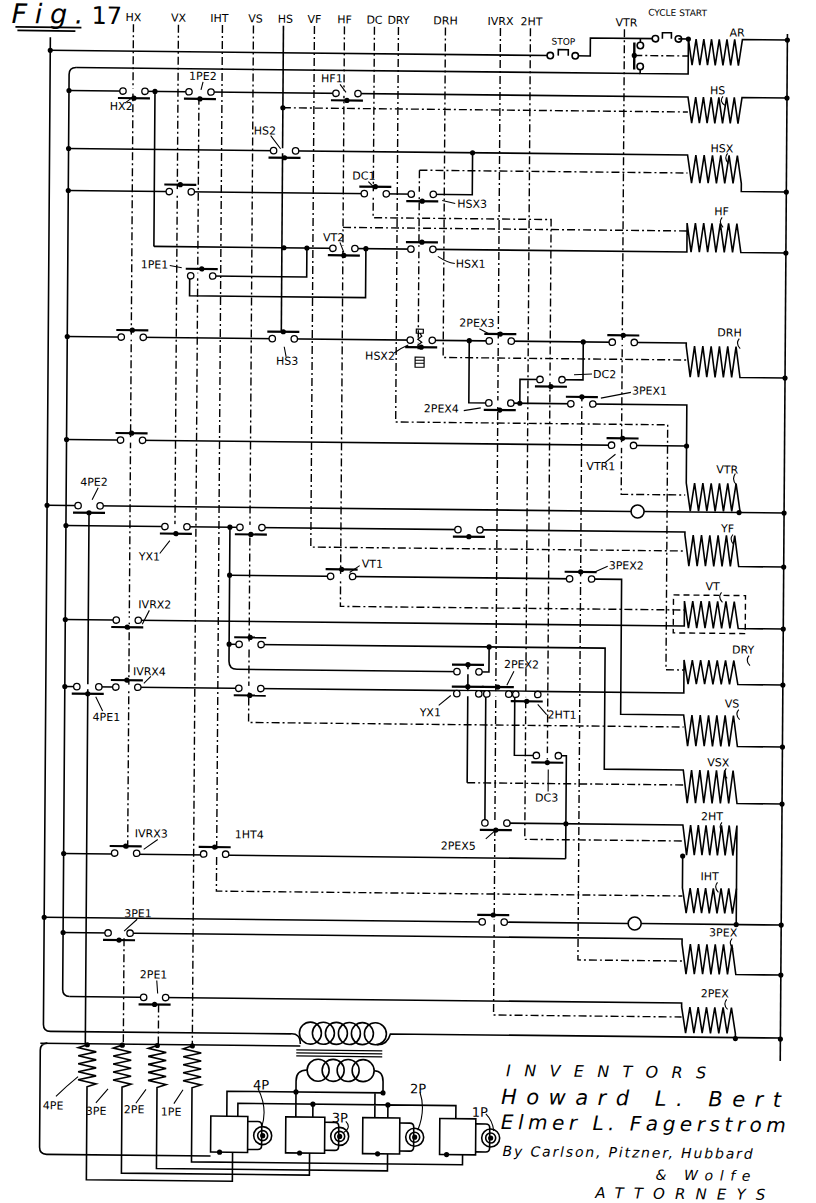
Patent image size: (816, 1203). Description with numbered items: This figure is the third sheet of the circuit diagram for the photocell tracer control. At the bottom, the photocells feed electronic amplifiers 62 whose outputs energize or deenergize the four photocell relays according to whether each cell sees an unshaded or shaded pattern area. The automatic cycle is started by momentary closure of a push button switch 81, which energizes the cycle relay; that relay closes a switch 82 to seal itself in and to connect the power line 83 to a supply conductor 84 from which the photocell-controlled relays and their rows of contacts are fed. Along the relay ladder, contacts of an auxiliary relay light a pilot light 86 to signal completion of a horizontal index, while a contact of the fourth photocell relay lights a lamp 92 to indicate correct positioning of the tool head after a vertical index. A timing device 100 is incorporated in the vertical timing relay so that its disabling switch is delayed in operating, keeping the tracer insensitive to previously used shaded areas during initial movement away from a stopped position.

The push button switch 81 is at (676, 29).
The switch 82 is at (629, 58).
The power line 83 is at (46, 104).
The supply conductor 84 is at (66, 221).
The pilot light 86 is at (632, 917).
The lamp 92 is at (632, 506).
The timing device 100 is at (747, 607).
The electronic amplifiers 62 is at (447, 1157).